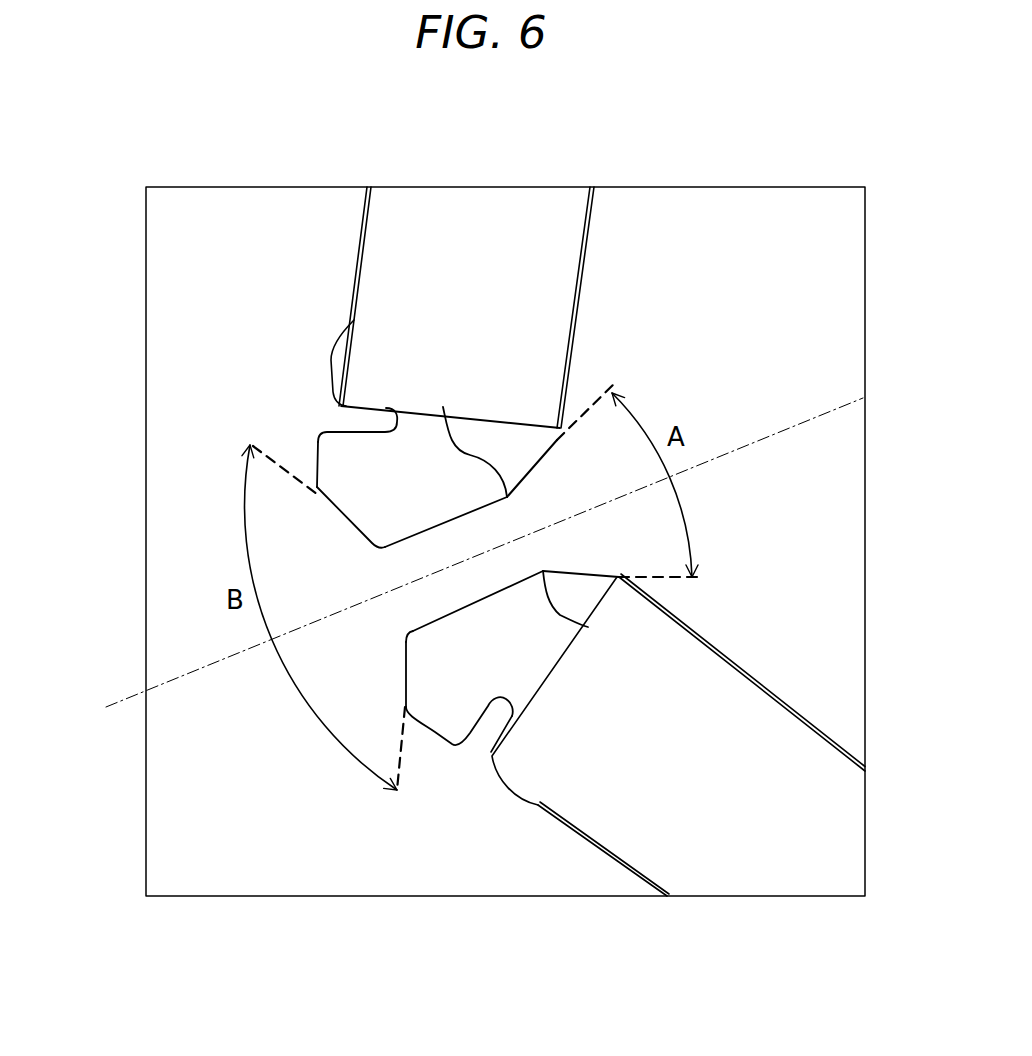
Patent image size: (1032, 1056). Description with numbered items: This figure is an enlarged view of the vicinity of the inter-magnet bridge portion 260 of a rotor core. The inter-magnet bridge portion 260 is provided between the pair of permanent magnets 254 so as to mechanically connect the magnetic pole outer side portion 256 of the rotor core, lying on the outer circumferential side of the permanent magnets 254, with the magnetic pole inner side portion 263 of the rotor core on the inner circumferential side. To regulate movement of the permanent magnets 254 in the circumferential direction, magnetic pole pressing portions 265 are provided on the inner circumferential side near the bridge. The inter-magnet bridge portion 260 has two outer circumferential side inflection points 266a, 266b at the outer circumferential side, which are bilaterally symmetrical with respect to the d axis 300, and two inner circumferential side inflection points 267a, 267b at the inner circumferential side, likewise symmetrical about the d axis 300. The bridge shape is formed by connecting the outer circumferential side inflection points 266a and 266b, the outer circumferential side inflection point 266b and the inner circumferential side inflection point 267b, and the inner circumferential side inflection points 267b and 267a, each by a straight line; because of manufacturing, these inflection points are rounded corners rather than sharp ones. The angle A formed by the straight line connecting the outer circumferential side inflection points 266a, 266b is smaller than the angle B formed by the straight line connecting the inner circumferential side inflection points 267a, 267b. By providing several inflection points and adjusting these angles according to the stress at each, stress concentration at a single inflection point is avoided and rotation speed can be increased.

The permanent magnets 254 is at (464, 273).
The magnetic pole outer side portion 256 is at (767, 392).
The inter-magnet bridge portion 260 is at (462, 575).
The magnetic pole inner side portion 263 is at (193, 638).
The magnetic pole pressing portions 265 is at (347, 425).
The outer circumferential side inflection point 266a is at (557, 433).
The outer circumferential side inflection point 266b is at (443, 407).
The inner circumferential side inflection point 267a is at (318, 488).
The inner circumferential side inflection point 267b is at (382, 546).
The d axis 300 is at (810, 436).